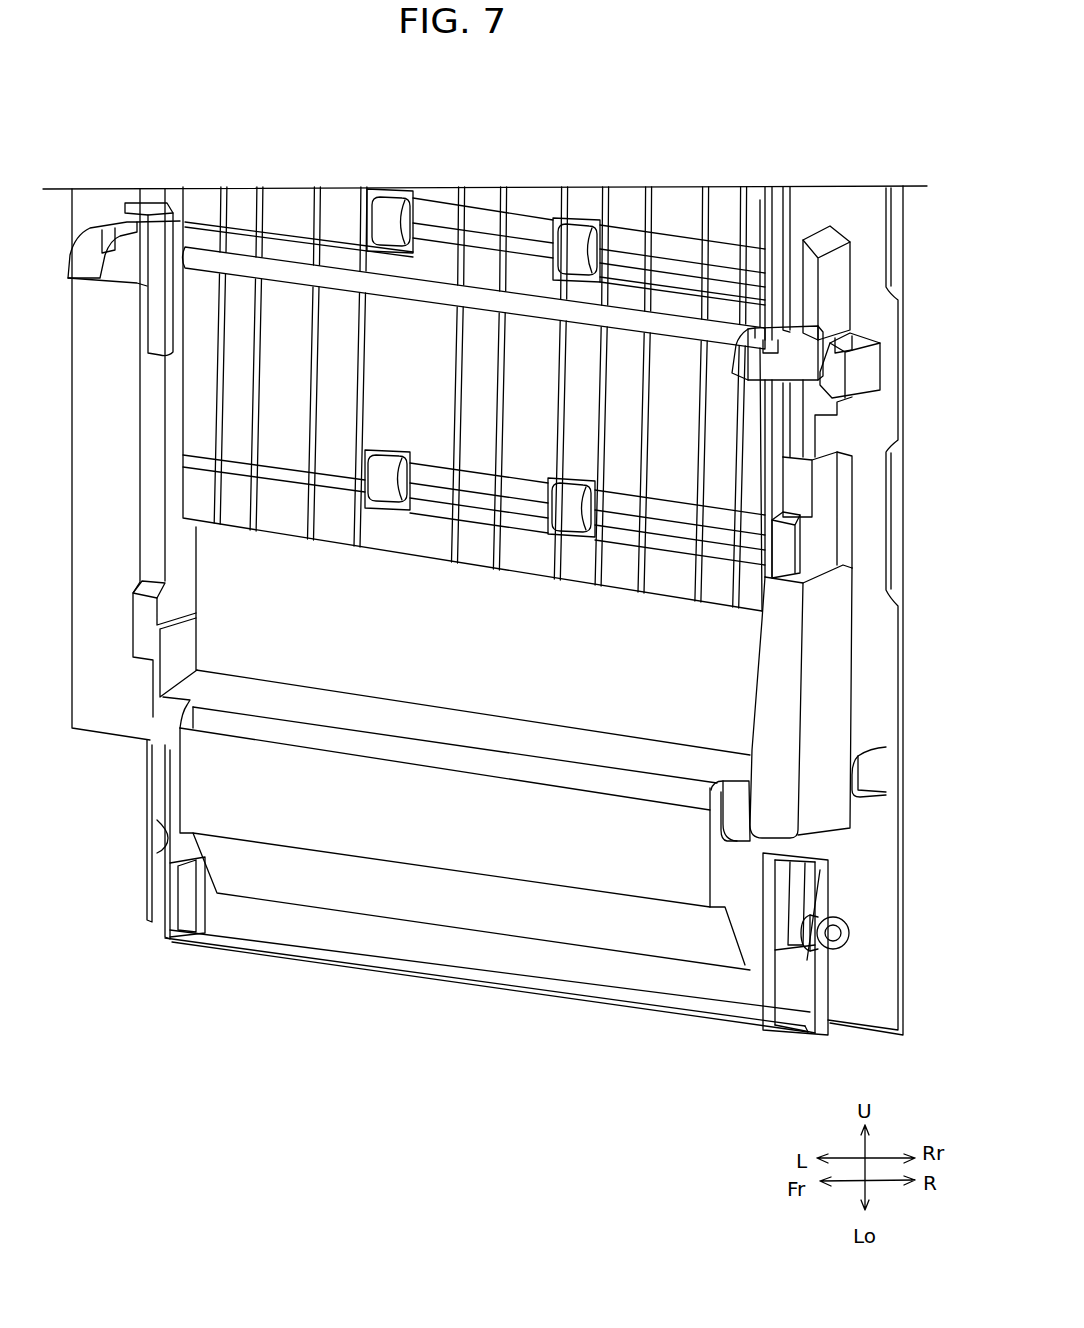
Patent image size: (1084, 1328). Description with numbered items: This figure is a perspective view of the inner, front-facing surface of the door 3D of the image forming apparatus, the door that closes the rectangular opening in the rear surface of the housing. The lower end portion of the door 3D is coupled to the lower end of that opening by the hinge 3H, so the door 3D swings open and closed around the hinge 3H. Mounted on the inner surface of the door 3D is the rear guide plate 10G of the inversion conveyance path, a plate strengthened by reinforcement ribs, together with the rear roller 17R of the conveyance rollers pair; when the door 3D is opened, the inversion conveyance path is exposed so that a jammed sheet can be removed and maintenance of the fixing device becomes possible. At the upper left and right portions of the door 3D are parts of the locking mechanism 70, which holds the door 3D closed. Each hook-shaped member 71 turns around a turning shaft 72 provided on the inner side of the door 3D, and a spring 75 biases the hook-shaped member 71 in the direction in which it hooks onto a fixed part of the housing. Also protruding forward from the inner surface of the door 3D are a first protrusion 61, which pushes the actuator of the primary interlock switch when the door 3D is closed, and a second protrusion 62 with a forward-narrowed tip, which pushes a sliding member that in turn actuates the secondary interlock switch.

The door 3D is at (417, 1012).
The hinge 3H is at (152, 842).
The guide plate 10G is at (478, 572).
The roller 17R is at (570, 545).
The first protrusion 61 is at (882, 747).
The second protrusion 62 is at (872, 397).
The locking mechanism 70 is at (513, 340).
The hook-shaped member 71 is at (120, 288).
The turning shaft 72 is at (855, 333).
The spring 75 is at (862, 362).